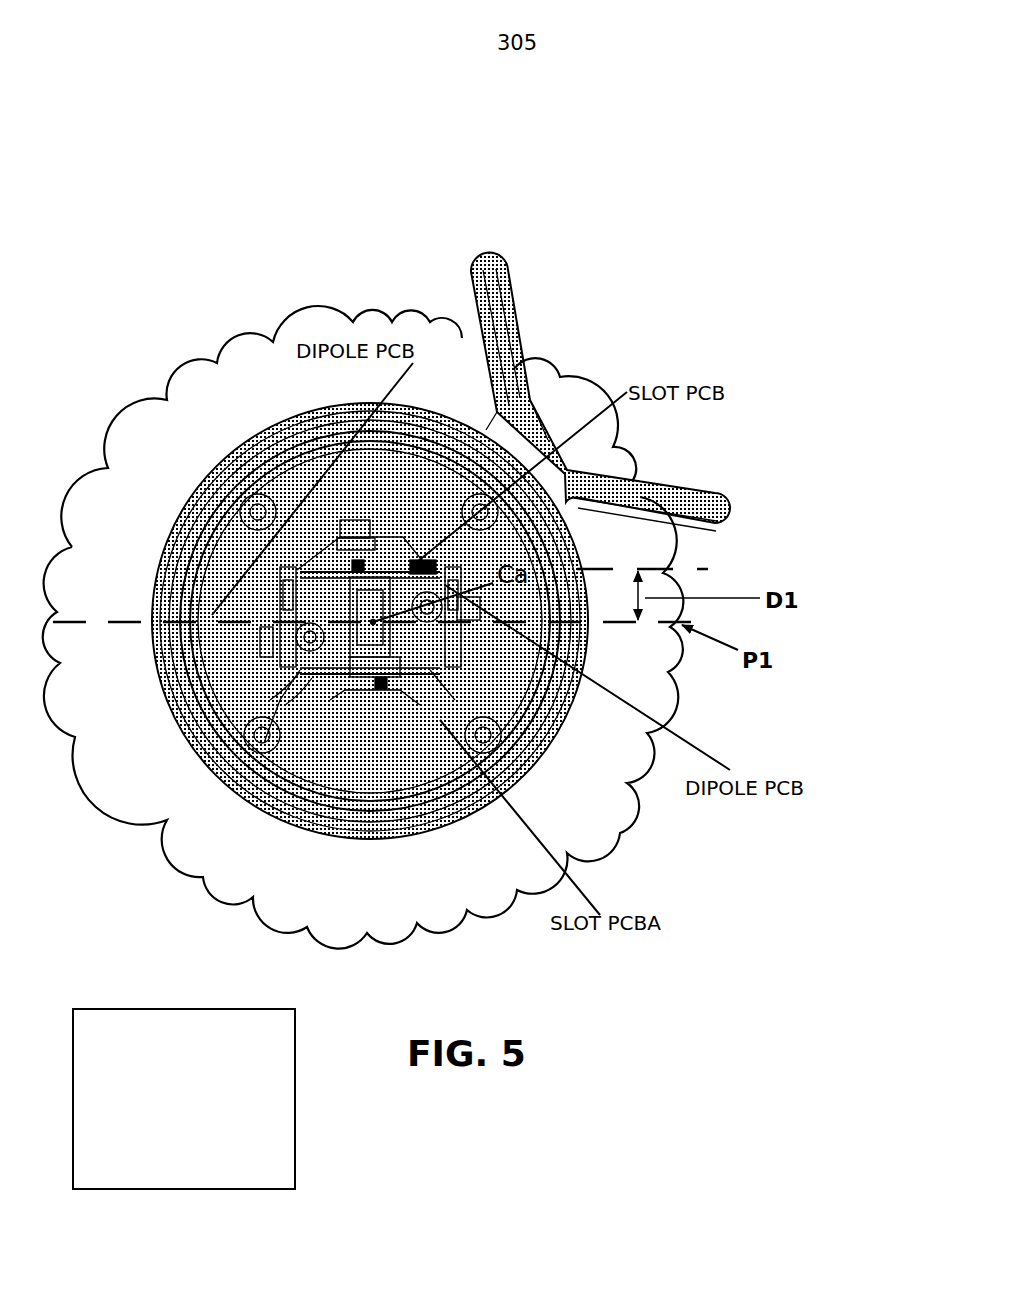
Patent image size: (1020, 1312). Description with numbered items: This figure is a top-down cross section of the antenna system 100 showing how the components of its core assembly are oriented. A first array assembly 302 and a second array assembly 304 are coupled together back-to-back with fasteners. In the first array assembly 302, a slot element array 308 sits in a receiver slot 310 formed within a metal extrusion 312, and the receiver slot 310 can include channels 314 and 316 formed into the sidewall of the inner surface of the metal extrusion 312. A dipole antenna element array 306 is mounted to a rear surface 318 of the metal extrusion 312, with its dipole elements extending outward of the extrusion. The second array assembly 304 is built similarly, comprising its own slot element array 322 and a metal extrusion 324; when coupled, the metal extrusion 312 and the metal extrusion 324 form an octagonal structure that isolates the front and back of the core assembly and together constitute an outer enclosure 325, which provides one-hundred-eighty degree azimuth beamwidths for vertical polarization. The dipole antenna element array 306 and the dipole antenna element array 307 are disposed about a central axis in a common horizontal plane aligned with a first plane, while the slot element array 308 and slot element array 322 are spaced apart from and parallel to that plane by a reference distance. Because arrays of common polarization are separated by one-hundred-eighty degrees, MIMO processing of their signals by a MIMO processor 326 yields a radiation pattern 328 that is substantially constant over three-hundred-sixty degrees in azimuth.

The antenna system 100 is at (612, 292).
The first array assembly 302 is at (237, 694).
The second array assembly 304 is at (286, 541).
The dipole antenna element array 306 is at (212, 615).
The dipole antenna element array 307 is at (520, 622).
The slot element array 308 is at (340, 683).
The receiver slot 310 is at (478, 650).
The metal extrusion 312 is at (357, 705).
The channel 314 is at (452, 679).
The channel 316 is at (312, 677).
The rear surface 318 is at (334, 637).
The slot element array 322 is at (392, 568).
The metal extrusion 324 is at (440, 568).
The outer enclosure 325 is at (530, 627).
The MIMO processor 326 is at (237, 762).
The radiation pattern 328 is at (622, 833).